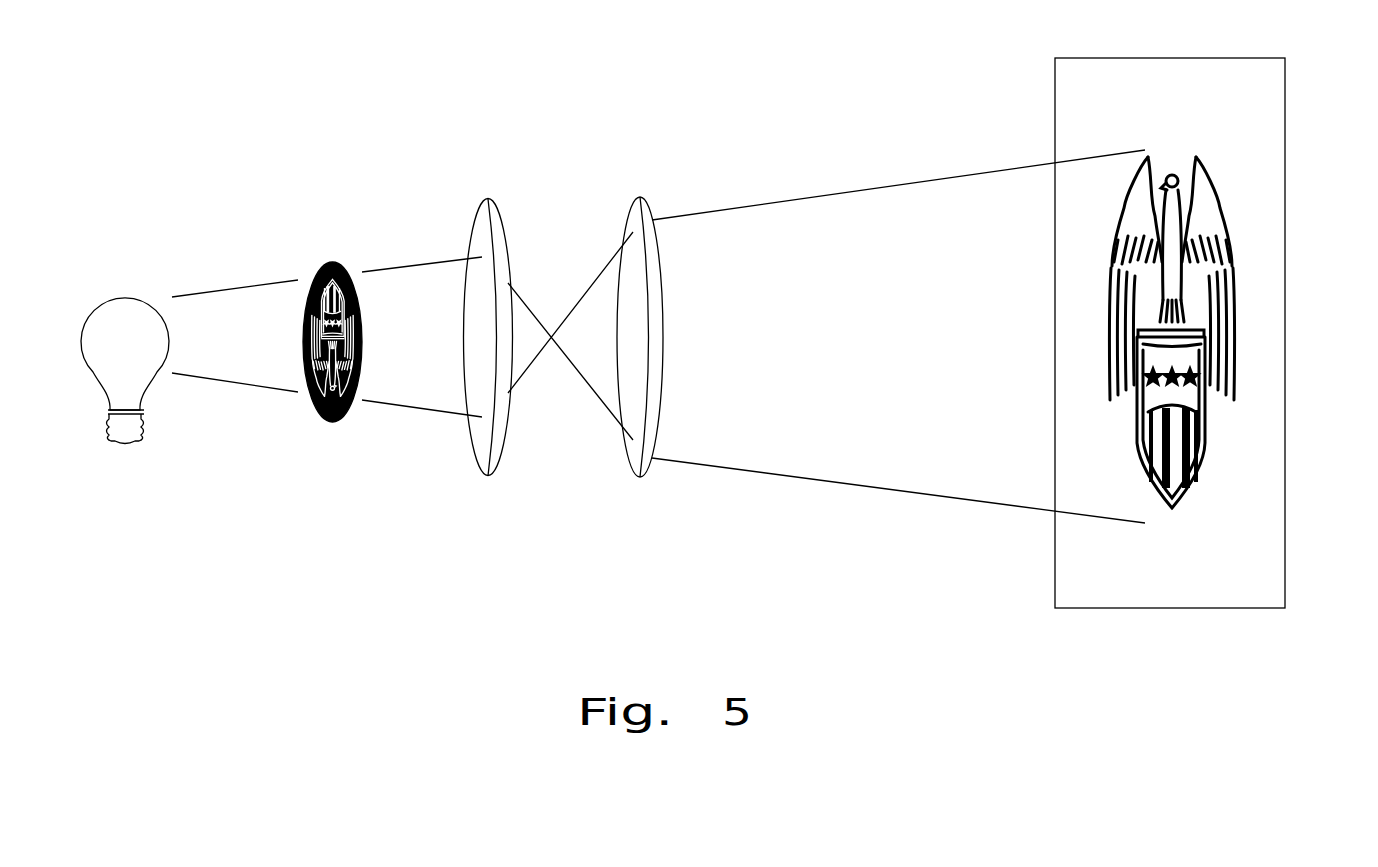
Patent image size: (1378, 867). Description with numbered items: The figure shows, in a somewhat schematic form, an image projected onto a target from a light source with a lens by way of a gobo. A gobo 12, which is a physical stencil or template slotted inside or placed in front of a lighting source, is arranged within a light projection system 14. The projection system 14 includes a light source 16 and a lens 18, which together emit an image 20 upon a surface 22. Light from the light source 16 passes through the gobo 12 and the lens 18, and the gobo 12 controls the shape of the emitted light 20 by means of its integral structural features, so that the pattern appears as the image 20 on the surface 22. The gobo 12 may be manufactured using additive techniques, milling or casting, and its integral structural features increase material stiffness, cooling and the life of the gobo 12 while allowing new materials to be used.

The gobo 12 is at (325, 263).
The light projection system 14 is at (866, 156).
The light source 16 is at (137, 294).
The lens 18 is at (633, 208).
The image 20 is at (1248, 181).
The surface 22 is at (1285, 228).